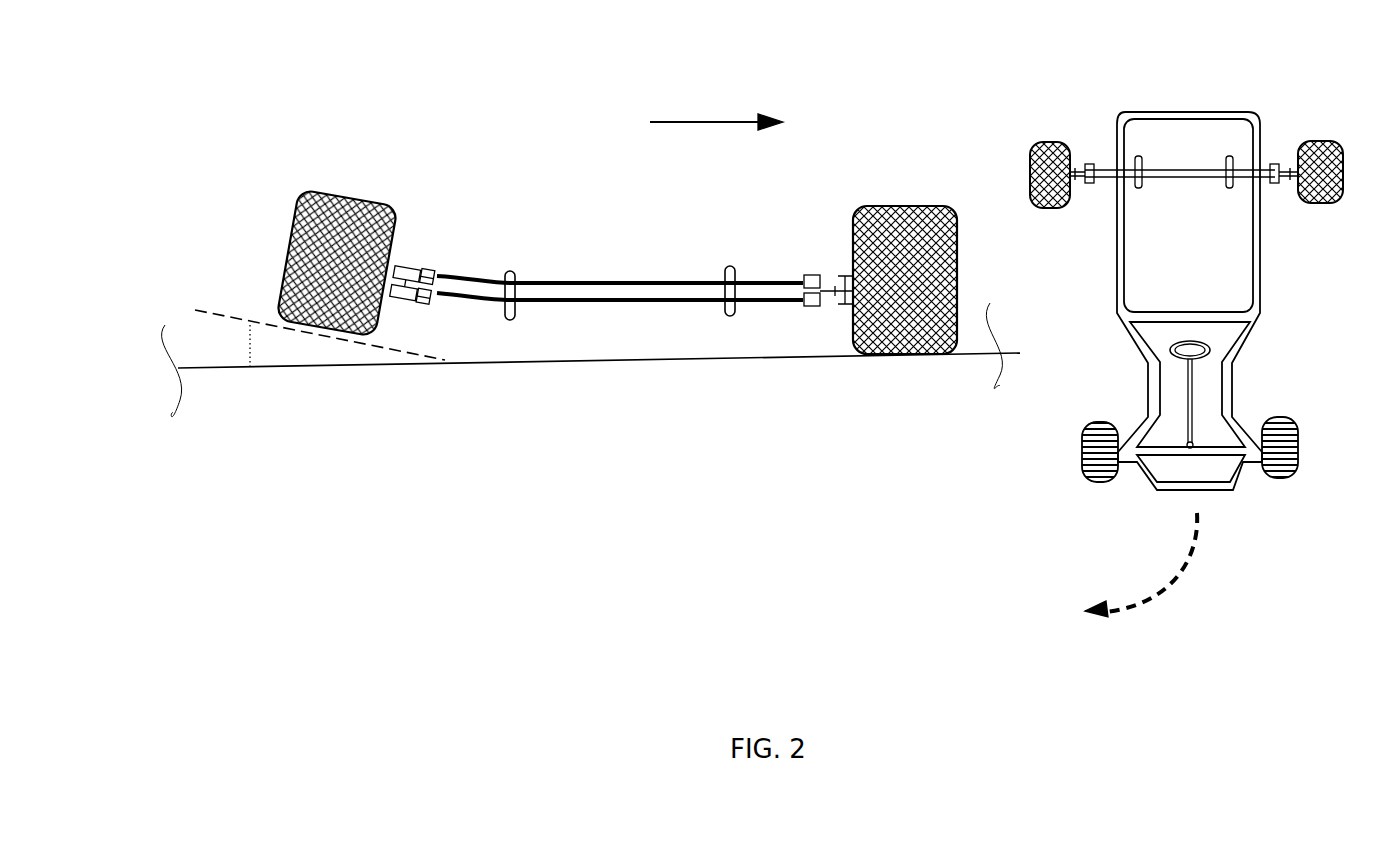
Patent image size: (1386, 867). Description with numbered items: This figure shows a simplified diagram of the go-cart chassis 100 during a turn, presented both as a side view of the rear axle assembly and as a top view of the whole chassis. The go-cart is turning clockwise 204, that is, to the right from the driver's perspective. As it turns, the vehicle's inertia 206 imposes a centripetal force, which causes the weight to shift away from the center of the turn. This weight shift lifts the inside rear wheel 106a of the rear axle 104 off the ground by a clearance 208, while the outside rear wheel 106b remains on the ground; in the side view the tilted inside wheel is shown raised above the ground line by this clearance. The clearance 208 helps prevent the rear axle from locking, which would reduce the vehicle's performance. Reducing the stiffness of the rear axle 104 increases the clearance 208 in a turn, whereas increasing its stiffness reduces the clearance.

The go-cart chassis 100 is at (1203, 58).
The rear axle 104 is at (489, 136).
The inside rear wheel 106a is at (340, 351).
The rear wheel 106b is at (897, 360).
The clockwise turn 204 is at (1166, 627).
The inertia 206 is at (712, 110).
The clearance 208 is at (290, 353).